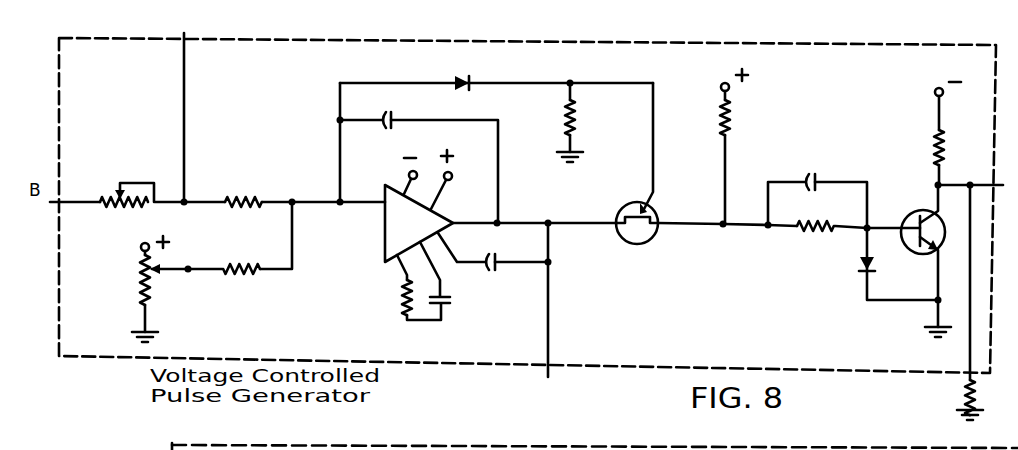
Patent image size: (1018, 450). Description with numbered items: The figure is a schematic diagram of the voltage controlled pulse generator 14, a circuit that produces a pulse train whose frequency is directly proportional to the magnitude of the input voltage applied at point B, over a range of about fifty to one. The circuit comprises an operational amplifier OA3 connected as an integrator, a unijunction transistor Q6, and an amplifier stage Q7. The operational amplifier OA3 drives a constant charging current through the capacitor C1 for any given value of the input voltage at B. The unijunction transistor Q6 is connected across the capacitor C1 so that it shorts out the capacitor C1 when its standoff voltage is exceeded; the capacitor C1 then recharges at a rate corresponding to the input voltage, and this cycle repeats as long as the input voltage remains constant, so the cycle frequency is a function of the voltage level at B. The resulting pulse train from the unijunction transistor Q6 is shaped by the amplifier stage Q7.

The voltage controlled pulse generator 14 is at (58, 313).
The capacitor C1 is at (394, 114).
The operational amplifier OA3 is at (386, 249).
The unijunction transistor Q6 is at (636, 244).
The amplifier stage Q7 is at (906, 242).